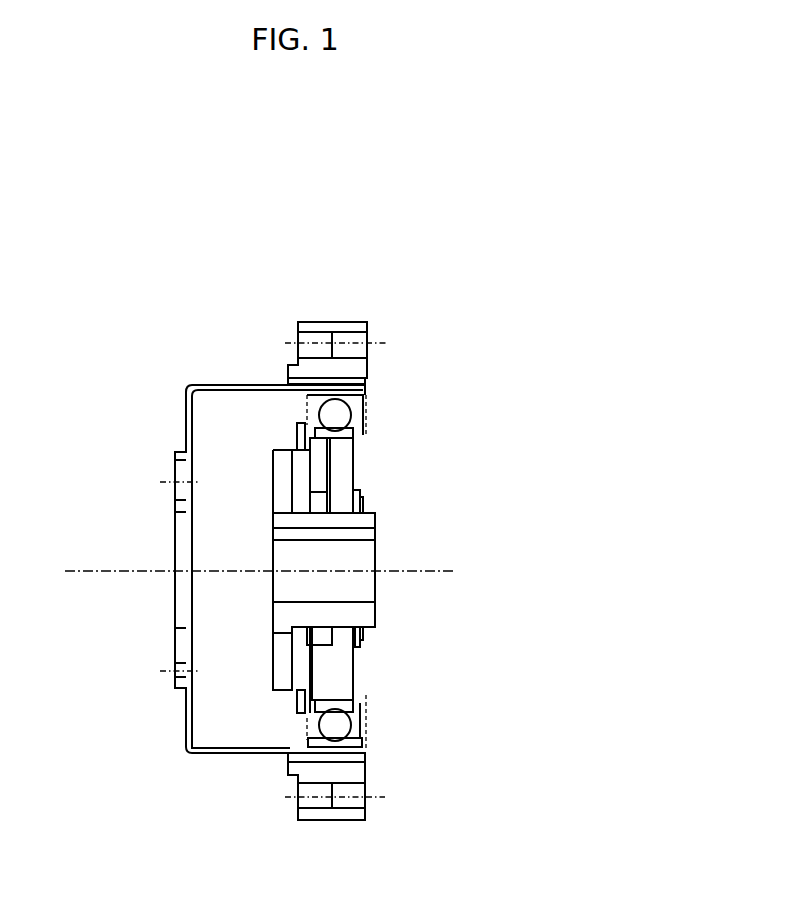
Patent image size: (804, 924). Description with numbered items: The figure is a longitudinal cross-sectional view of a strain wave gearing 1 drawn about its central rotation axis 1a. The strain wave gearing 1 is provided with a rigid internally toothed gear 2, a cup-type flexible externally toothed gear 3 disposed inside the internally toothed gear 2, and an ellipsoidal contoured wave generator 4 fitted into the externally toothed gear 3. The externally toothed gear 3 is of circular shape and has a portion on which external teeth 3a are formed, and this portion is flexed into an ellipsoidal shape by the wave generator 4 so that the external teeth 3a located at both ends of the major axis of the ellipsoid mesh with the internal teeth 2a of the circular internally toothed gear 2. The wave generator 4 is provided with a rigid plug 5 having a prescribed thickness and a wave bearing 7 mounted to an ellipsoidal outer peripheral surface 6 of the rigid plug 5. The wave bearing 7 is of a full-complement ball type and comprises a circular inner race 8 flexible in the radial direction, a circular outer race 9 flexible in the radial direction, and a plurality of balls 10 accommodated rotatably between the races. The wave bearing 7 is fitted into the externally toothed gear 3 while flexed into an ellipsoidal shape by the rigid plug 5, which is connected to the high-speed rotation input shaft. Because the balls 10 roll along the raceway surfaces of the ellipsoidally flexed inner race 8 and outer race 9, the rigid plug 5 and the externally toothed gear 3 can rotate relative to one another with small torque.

The strain wave gearing 1 is at (150, 286).
The rotation axis 1a is at (100, 570).
The rigid internally toothed gear 2 is at (372, 369).
The internal teeth 2a is at (300, 388).
The flexible externally toothed gear 3 is at (374, 396).
The external teeth 3a is at (305, 378).
The wave generator 4 is at (361, 472).
The rigid plug 5 is at (355, 668).
The ellipsoidal outer peripheral surface 6 is at (348, 720).
The wave bearing 7 is at (360, 728).
The inner race 8 is at (352, 710).
The outer race 9 is at (355, 743).
The balls 10 is at (307, 727).